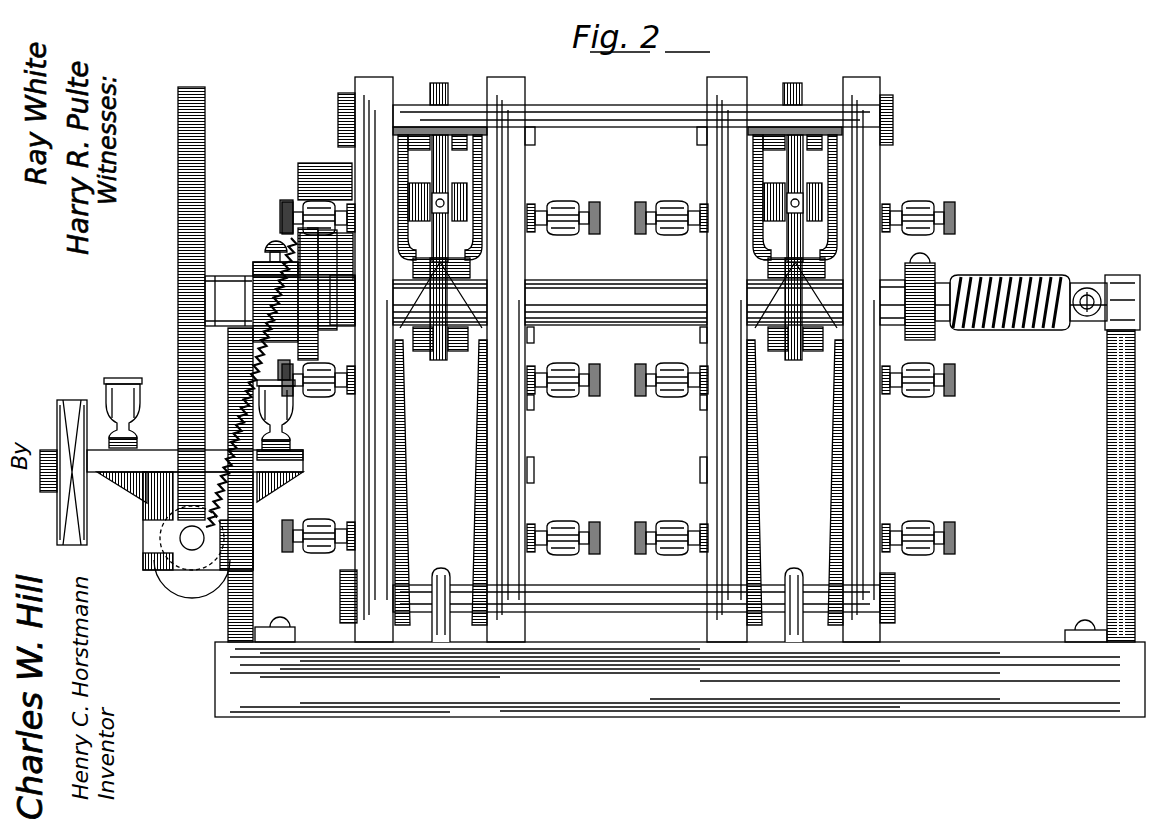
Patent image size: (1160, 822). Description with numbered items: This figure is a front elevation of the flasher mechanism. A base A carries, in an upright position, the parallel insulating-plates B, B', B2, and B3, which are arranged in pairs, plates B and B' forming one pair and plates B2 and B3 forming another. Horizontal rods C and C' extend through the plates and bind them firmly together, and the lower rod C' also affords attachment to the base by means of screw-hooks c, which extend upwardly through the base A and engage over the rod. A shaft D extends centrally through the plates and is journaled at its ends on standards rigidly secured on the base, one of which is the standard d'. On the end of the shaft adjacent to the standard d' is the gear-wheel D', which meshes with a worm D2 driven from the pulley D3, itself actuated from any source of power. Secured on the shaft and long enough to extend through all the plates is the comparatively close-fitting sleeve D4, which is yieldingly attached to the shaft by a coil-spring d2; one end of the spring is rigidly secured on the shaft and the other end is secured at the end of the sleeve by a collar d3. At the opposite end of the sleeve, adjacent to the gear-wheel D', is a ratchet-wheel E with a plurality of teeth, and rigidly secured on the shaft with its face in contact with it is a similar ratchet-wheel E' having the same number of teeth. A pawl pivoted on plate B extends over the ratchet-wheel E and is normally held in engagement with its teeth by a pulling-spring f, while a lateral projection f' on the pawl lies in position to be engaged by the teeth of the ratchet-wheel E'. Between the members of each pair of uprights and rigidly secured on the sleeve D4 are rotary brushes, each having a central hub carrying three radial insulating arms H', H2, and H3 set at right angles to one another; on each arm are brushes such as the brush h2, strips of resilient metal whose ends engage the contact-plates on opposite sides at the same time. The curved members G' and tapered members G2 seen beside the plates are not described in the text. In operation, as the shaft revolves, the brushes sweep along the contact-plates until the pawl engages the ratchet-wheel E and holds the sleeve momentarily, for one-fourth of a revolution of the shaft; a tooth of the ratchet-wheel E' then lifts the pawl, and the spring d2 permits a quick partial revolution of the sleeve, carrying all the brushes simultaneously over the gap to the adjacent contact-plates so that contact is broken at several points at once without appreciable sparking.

The base A is at (830, 705).
The insulating-plate B is at (374, 415).
The insulating-plate B' is at (506, 415).
The insulating-plate B2 is at (735, 642).
The insulating-plate B3 is at (855, 615).
The rod C is at (615, 125).
The rod C' is at (618, 394).
The screw-hook c is at (445, 573).
The shaft D is at (993, 282).
The gear-wheel D' is at (207, 303).
The worm D2 is at (195, 573).
The pulley D3 is at (70, 400).
The sleeve D4 is at (618, 302).
The standard d' is at (696, 458).
The spring d2 is at (1045, 330).
The collar d3 is at (930, 338).
The ratchet-wheel E is at (229, 340).
The ratchet-wheel E' is at (279, 327).
The pulling-spring f is at (230, 435).
The projection f' is at (271, 274).
The curved arm G' is at (632, 197).
The rack bar G2 is at (407, 452).
The radial arm H' is at (617, 198).
The radial arm H2 is at (443, 84).
The radial arm H3 is at (441, 322).
The brush h2 is at (480, 133).